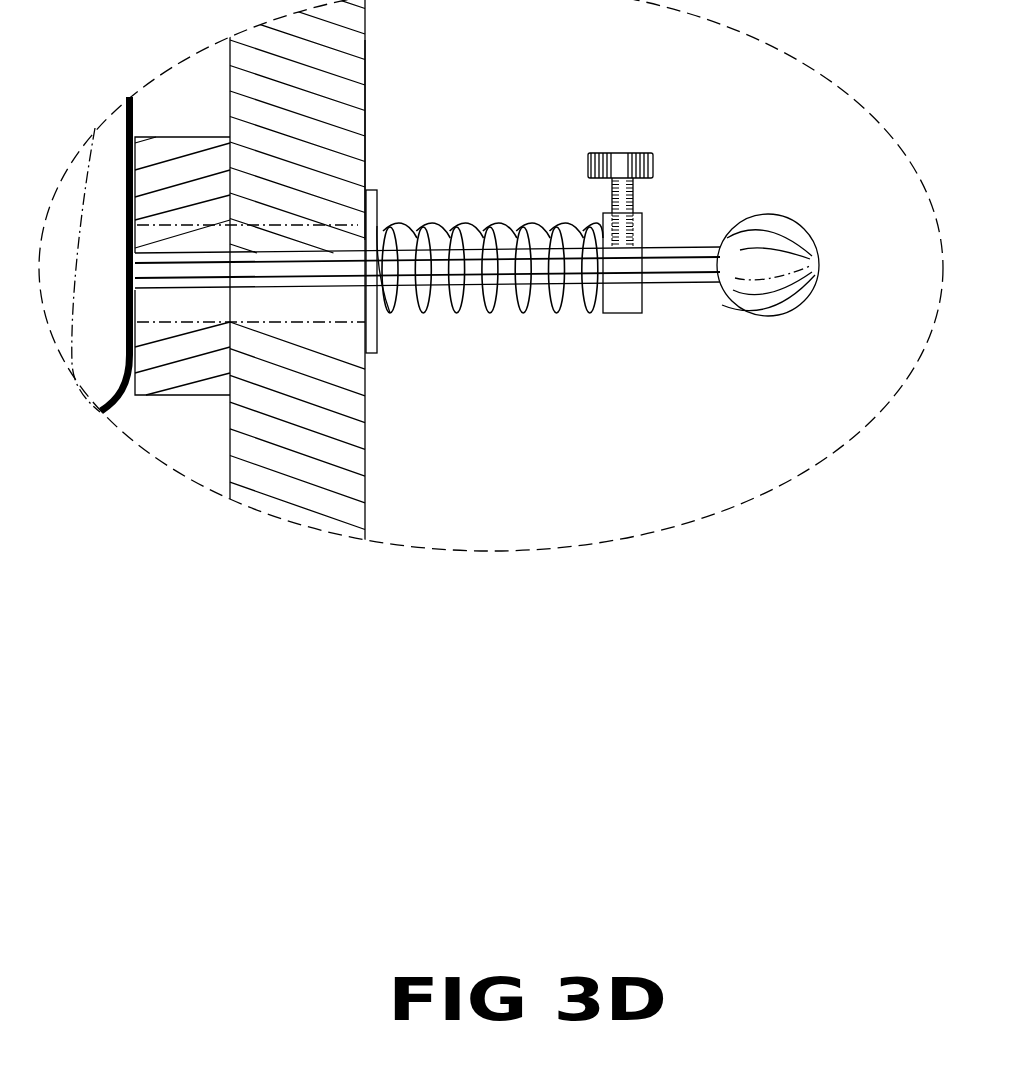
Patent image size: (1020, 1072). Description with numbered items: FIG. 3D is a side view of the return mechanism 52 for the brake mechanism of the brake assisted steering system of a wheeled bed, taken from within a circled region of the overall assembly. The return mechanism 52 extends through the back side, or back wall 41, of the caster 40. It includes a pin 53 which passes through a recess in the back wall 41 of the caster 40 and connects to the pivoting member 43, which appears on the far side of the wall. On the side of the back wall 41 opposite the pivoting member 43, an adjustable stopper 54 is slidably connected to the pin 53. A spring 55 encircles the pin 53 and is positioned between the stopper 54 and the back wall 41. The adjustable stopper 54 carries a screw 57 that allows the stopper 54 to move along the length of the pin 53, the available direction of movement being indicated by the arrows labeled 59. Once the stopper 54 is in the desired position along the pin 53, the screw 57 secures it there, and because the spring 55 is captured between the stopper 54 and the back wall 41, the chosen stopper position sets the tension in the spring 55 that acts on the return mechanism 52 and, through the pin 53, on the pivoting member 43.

The caster 40 is at (367, 460).
The back wall of the caster 41 is at (350, 118).
The pivoting member 43 is at (88, 380).
The return mechanism 52 is at (497, 325).
The pin 53 is at (673, 267).
The adjustable stopper 54 is at (688, 192).
The spring 55 is at (557, 307).
The screw 57 is at (663, 143).
The arrows indicating stopper movement 59 is at (585, 193).